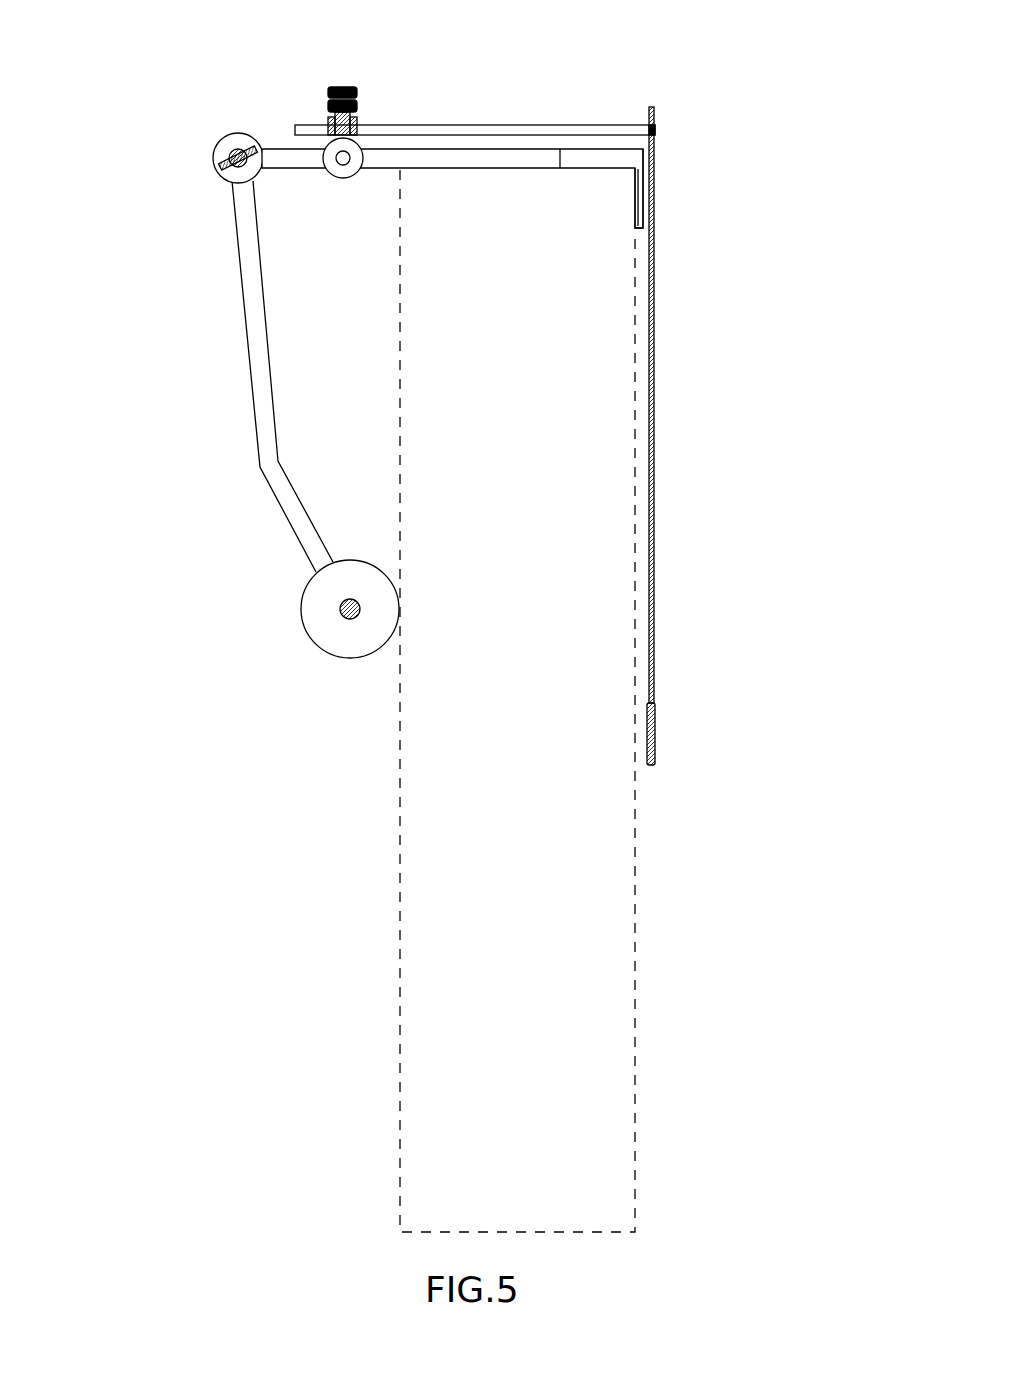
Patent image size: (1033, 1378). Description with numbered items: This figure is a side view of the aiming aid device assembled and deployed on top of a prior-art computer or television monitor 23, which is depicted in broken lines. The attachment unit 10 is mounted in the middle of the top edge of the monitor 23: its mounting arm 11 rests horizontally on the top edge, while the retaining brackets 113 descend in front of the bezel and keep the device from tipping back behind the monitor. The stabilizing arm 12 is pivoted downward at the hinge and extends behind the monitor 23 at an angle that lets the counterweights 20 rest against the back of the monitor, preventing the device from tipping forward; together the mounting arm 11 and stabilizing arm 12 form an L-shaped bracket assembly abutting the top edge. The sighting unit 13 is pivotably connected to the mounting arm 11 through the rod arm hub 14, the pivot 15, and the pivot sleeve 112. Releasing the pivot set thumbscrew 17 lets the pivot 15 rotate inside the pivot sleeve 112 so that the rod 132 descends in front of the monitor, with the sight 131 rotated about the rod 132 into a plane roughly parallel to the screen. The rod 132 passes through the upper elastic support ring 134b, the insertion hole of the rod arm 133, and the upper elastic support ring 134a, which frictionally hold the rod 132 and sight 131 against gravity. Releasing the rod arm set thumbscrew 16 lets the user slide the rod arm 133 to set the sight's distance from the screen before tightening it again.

The attachment unit 10 is at (218, 106).
The mounting arm 11 is at (490, 160).
The pivot sleeve 112 is at (330, 167).
The retaining brackets 113 is at (638, 216).
The stabilizing arm 12 is at (278, 482).
The sighting unit 13 is at (666, 487).
The sight 131 is at (651, 745).
The rod 132 is at (651, 680).
The rod arm 133 is at (505, 127).
The upper elastic support ring 134a is at (655, 127).
The upper elastic support ring 134b is at (655, 136).
The rod arm hub 14 is at (327, 122).
The pivot 15 is at (344, 161).
The rod arm set thumbscrew 16 is at (338, 86).
The pivot set thumbscrew 17 is at (357, 104).
The counterweights 20 is at (318, 622).
The monitor 23 is at (592, 1198).